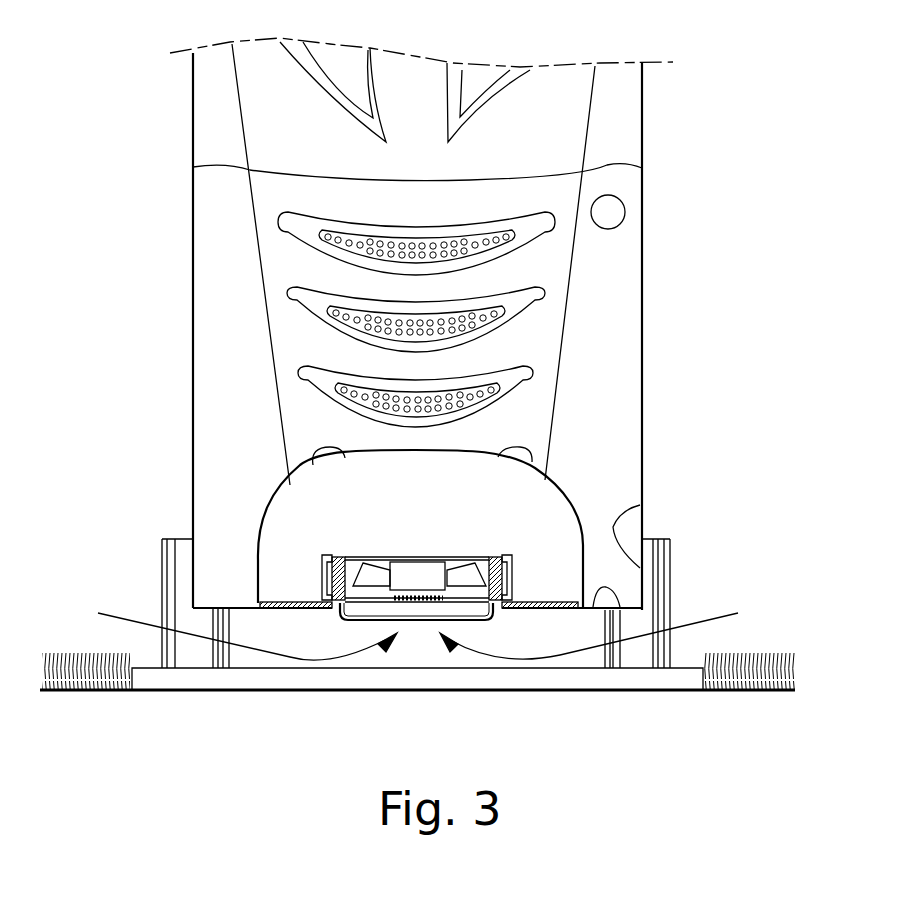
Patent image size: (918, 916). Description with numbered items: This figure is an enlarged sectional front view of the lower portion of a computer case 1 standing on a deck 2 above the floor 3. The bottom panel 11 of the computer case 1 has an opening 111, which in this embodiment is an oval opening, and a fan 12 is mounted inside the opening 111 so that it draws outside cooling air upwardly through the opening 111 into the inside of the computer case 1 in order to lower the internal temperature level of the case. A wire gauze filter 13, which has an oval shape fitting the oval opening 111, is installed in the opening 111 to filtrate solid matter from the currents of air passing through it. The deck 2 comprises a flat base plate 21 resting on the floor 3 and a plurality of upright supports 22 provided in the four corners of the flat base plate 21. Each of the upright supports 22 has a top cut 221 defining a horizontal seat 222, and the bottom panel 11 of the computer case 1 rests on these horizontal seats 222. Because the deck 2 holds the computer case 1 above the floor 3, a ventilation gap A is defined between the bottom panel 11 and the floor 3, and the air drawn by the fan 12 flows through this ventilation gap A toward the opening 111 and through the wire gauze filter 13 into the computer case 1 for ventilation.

The computer case 1 is at (652, 140).
The bottom panel 11 is at (552, 600).
The opening 111 is at (372, 610).
The fan 12 is at (548, 597).
The wire gauze filter 13 is at (423, 622).
The deck 2 is at (419, 621).
The flat base plate 21 is at (672, 678).
The upright supports 22 is at (657, 557).
The top cut 221 is at (640, 505).
The horizontal seat 222 is at (600, 590).
The floor 3 is at (743, 680).
The ventilation gap A is at (532, 628).